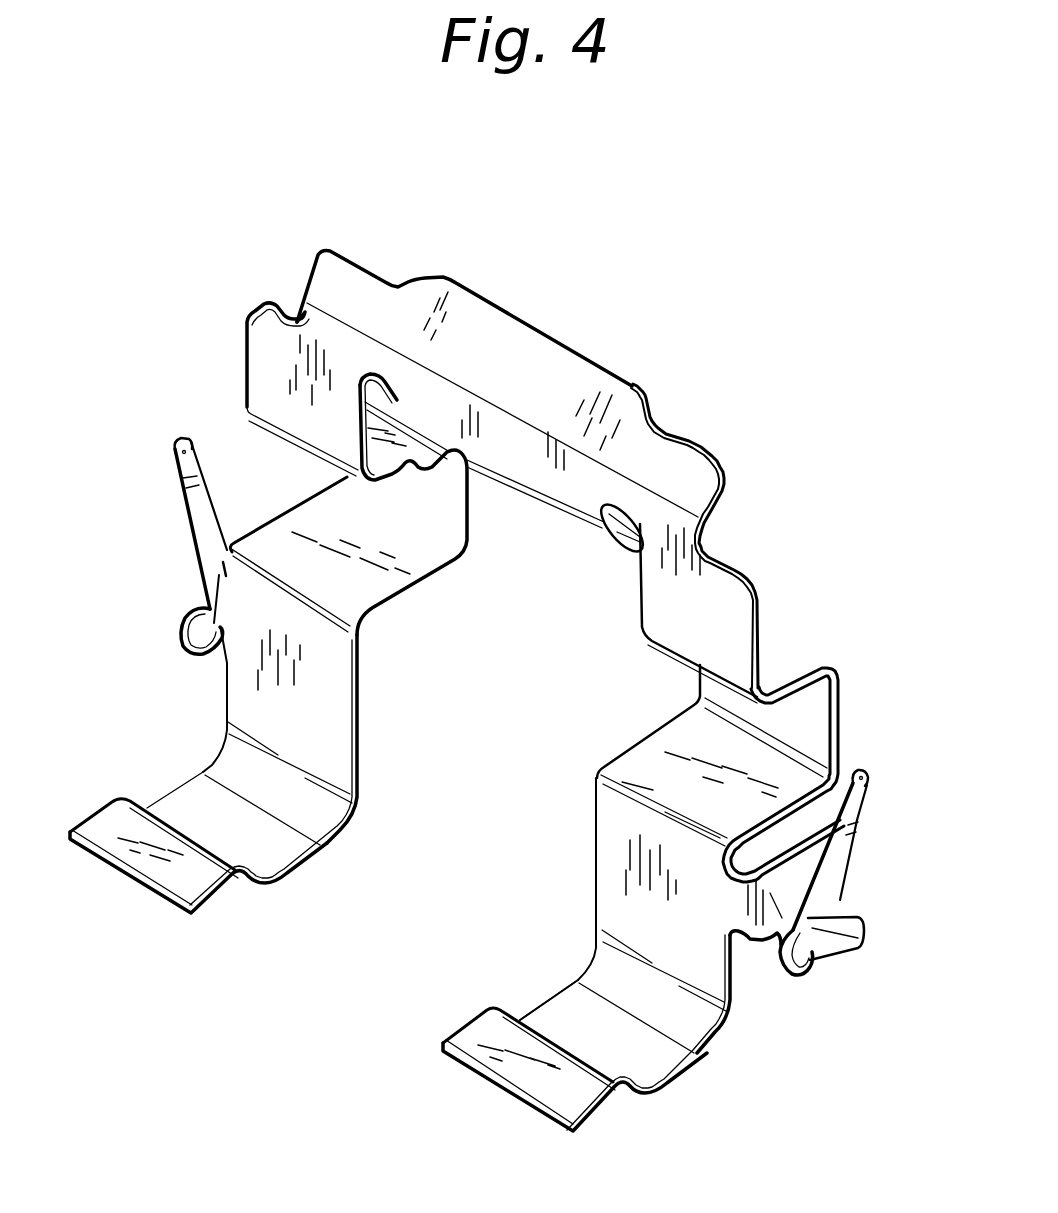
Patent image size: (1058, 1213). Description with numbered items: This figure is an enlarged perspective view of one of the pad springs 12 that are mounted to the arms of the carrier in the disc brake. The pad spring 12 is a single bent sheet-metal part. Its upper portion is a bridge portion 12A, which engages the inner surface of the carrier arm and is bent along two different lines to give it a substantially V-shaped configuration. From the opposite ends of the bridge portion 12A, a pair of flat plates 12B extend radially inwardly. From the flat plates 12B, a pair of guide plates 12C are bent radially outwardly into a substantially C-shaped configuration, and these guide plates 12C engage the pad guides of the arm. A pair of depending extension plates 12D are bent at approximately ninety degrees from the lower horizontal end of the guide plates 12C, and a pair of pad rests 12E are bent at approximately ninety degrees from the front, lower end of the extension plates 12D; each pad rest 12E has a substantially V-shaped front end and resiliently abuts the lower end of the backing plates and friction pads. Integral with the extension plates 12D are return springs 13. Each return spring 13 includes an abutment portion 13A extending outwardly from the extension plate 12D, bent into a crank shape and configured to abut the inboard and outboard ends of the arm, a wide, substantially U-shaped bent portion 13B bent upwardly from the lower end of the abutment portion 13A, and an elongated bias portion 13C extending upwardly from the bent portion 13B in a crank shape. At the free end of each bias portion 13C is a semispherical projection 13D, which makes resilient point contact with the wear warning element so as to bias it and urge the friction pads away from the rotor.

The pad spring 12 is at (684, 364).
The bridge portion 12A is at (500, 328).
The flat plates 12B is at (275, 361).
The guide plates 12C is at (450, 512).
The extension plates 12D is at (328, 708).
The pad rests 12E is at (205, 873).
The return springs 13 is at (175, 608).
The abutment portions 13A is at (227, 598).
The bent portions 13B is at (192, 662).
The bias portions 13C is at (197, 527).
The semispherical projections 13D is at (172, 452).